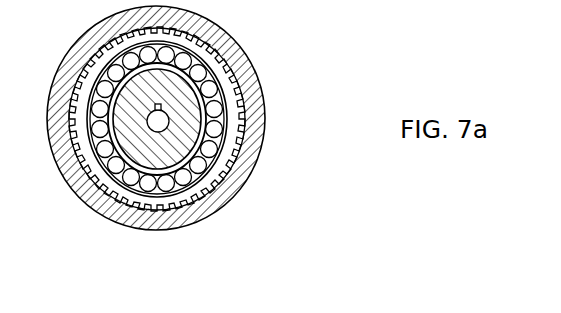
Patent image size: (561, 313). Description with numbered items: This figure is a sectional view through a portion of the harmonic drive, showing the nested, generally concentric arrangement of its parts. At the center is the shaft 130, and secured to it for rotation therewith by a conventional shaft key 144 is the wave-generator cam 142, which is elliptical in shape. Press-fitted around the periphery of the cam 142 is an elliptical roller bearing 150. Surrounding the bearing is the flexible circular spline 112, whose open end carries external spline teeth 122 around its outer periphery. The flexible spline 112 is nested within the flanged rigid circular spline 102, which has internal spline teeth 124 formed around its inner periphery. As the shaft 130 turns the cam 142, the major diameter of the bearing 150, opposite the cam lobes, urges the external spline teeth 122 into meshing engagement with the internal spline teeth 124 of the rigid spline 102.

The flanged rigid circular spline 102 is at (232, 36).
The flexible circular spline 112 is at (236, 72).
The internal spline teeth 124 is at (243, 95).
The external spline teeth 122 is at (233, 128).
The elliptical roller bearing 150 is at (175, 150).
The wave-generator cam 142 is at (243, 183).
The shaft 130 is at (211, 163).
The shaft key 144 is at (166, 91).